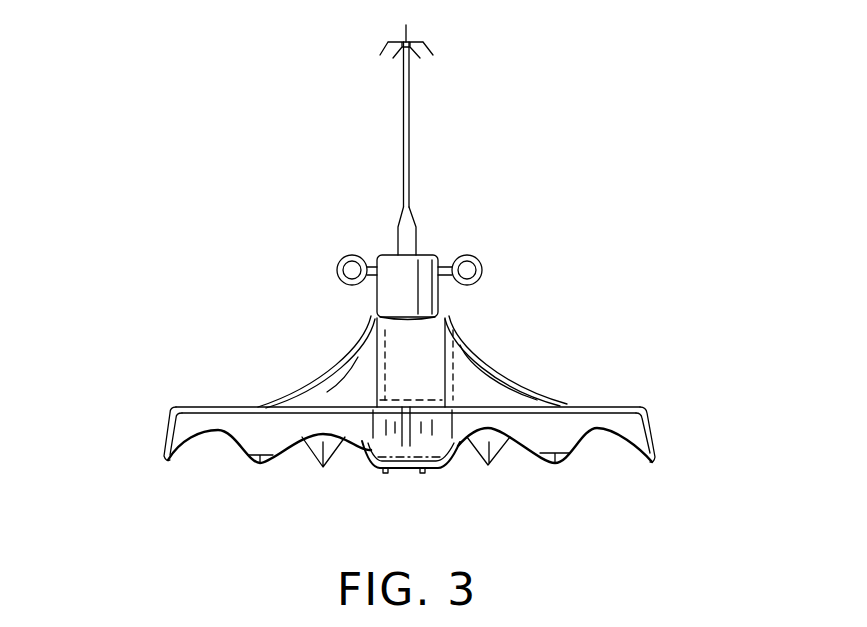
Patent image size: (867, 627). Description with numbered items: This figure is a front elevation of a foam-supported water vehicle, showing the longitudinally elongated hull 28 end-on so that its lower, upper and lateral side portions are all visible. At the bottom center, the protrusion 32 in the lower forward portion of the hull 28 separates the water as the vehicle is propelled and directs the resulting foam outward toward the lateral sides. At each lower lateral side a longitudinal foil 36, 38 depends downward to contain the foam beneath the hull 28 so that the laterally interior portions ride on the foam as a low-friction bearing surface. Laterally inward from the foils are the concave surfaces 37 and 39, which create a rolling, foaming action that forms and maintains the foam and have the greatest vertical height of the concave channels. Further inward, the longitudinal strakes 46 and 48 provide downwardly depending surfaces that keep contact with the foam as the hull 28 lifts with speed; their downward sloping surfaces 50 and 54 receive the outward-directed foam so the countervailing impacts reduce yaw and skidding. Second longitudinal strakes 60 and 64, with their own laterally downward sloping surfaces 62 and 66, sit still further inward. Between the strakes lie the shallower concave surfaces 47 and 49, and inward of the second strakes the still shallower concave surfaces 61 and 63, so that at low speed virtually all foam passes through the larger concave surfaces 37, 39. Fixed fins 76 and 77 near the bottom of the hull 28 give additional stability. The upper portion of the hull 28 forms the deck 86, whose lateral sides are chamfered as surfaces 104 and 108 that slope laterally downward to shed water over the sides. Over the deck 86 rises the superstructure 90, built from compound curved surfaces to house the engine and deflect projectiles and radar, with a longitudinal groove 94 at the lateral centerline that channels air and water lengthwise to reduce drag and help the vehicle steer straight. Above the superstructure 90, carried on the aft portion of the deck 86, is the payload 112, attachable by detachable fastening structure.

The hull 28 is at (543, 355).
The protrusion 32 is at (402, 473).
The longitudinal foil 36 is at (165, 461).
The concave surface 37 is at (208, 433).
The longitudinal foil 38 is at (652, 466).
The concave surface 39 is at (597, 433).
The longitudinal strake 46 is at (256, 464).
The concave surface 47 is at (300, 444).
The longitudinal strake 48 is at (557, 468).
The concave surface 49 is at (515, 439).
The downward sloping surface 50 is at (277, 458).
The downward sloping surface 54 is at (538, 458).
The second longitudinal strake 60 is at (327, 468).
The concave surface 61 is at (355, 444).
The downward sloping surface 62 is at (342, 459).
The concave surface 63 is at (455, 446).
The second longitudinal strake 64 is at (488, 467).
The downward sloping surface 66 is at (478, 459).
The fixed fin 76 is at (423, 474).
The fixed fin 77 is at (385, 474).
The deck 86 is at (215, 407).
The superstructure 90 is at (340, 356).
The longitudinal groove 94 is at (422, 313).
The chamfered surface 104 is at (172, 409).
The chamfered surface 108 is at (640, 407).
The payload 112 is at (435, 251).